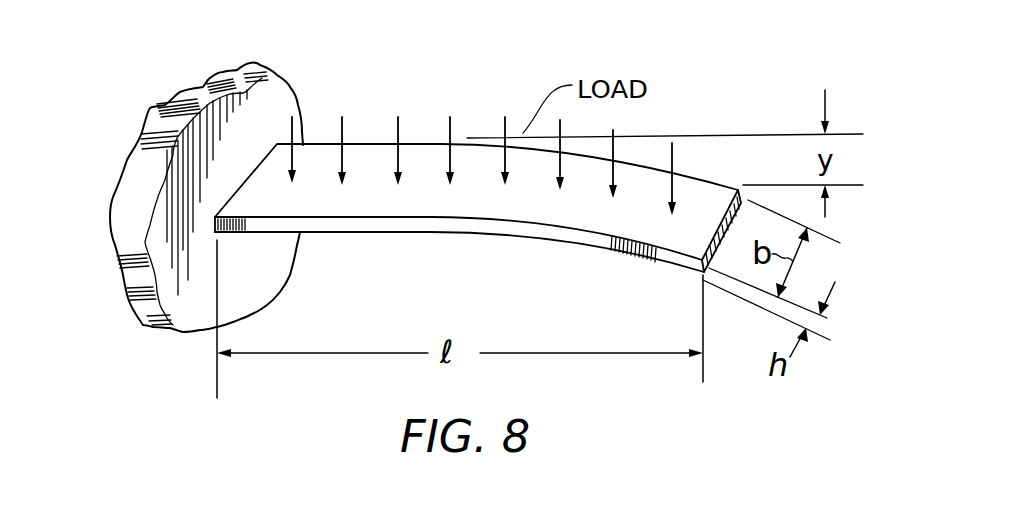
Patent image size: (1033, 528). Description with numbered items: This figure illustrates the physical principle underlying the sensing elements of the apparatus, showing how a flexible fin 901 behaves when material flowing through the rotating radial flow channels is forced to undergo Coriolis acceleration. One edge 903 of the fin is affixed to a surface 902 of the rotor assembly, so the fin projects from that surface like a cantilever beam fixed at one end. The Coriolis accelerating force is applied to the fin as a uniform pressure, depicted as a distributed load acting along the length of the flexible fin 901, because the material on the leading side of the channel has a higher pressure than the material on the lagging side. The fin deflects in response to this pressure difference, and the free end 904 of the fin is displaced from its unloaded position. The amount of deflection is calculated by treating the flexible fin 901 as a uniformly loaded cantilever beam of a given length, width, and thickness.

The flexible fin 901 is at (528, 207).
The surface of the rotor assembly 902 is at (160, 219).
The edge of fin 903 is at (247, 189).
The free end of beam 904 is at (718, 243).